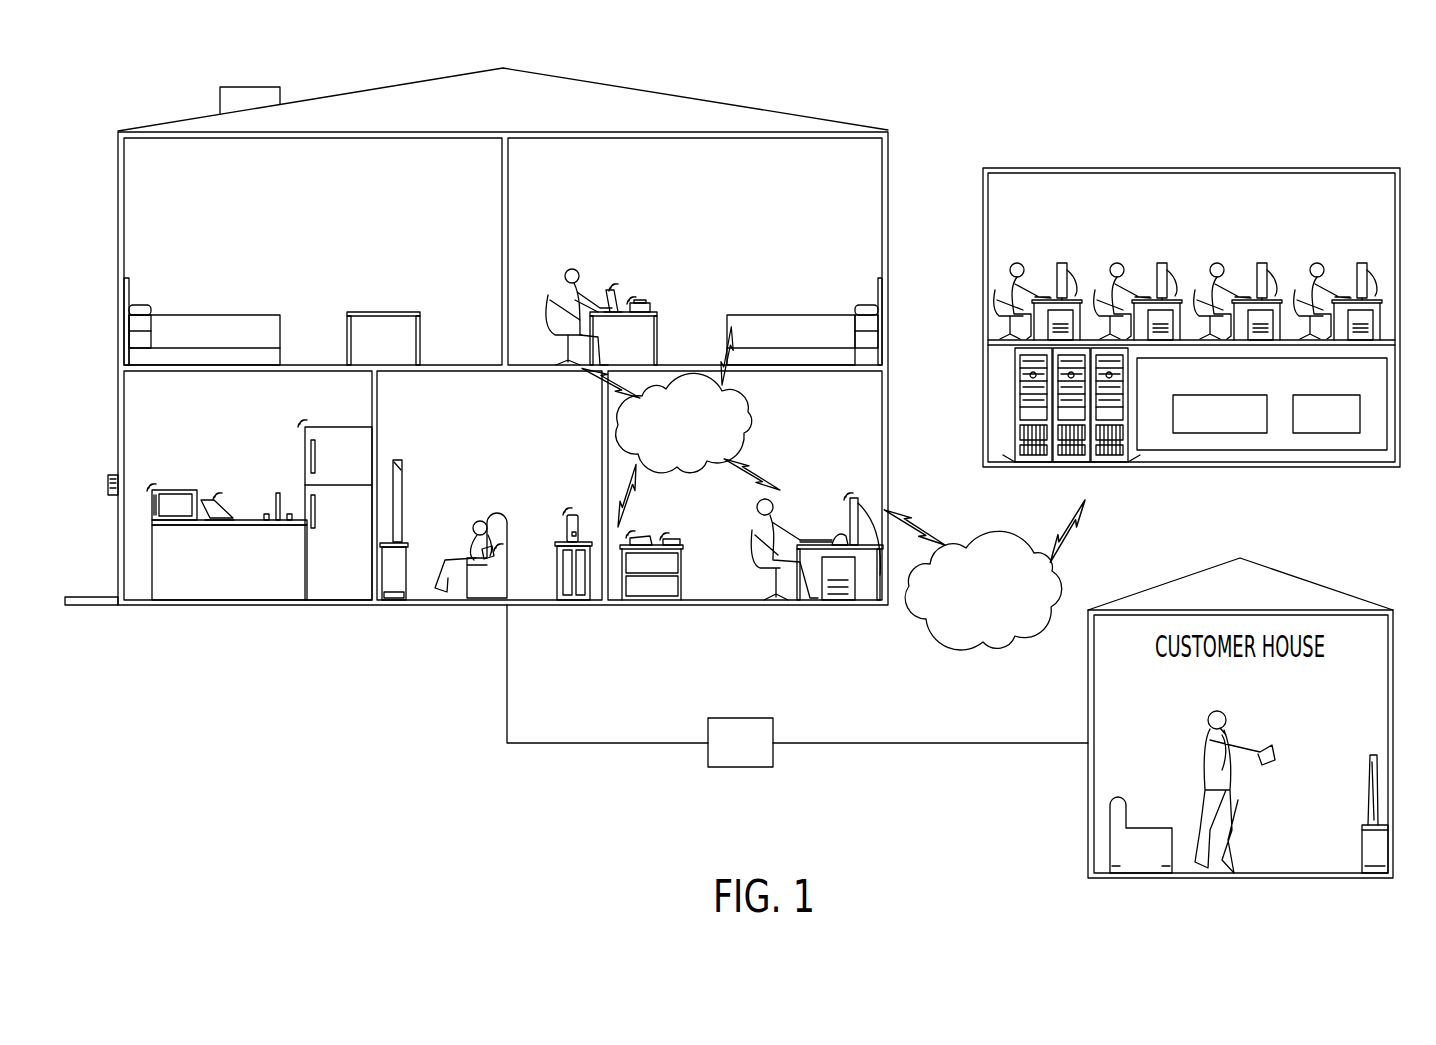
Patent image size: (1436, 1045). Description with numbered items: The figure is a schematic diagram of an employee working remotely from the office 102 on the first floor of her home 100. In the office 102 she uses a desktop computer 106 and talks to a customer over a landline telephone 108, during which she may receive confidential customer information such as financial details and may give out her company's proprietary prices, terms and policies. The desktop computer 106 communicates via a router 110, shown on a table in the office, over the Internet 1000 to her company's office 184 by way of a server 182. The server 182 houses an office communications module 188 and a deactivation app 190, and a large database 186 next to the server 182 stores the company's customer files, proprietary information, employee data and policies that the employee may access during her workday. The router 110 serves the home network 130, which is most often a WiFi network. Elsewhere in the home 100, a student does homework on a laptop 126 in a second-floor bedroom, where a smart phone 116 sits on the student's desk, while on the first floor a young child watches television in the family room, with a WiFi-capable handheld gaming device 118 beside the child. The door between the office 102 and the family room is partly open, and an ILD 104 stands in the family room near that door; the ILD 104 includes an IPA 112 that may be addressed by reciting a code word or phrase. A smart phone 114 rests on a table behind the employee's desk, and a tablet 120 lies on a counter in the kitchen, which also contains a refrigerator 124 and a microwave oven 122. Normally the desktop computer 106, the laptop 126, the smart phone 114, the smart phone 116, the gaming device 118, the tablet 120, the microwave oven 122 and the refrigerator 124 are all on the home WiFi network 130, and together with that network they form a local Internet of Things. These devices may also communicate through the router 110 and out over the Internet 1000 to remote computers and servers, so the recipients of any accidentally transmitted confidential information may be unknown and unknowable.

The home 100 is at (835, 110).
The office 102 is at (868, 393).
The ILD 104 is at (572, 521).
The desktop computer 106 is at (836, 598).
The landline telephone 108 is at (836, 540).
The router 110 is at (668, 547).
The IPA 112 is at (572, 521).
The smart phone 114 is at (632, 547).
The smart phone 116 is at (650, 300).
The WiFi-capable handheld gaming device 118 is at (487, 560).
The tablet 120 is at (209, 521).
The microwave oven 122 is at (175, 505).
The refrigerator 124 is at (347, 590).
The laptop 126 is at (605, 300).
The home network 130 is at (733, 412).
The server 182 is at (1387, 415).
The company's office 184 is at (1355, 167).
The database 186 is at (1106, 458).
The office communications module 188 is at (1213, 433).
The deactivation app 190 is at (1328, 433).
The Internet 1000 is at (935, 630).